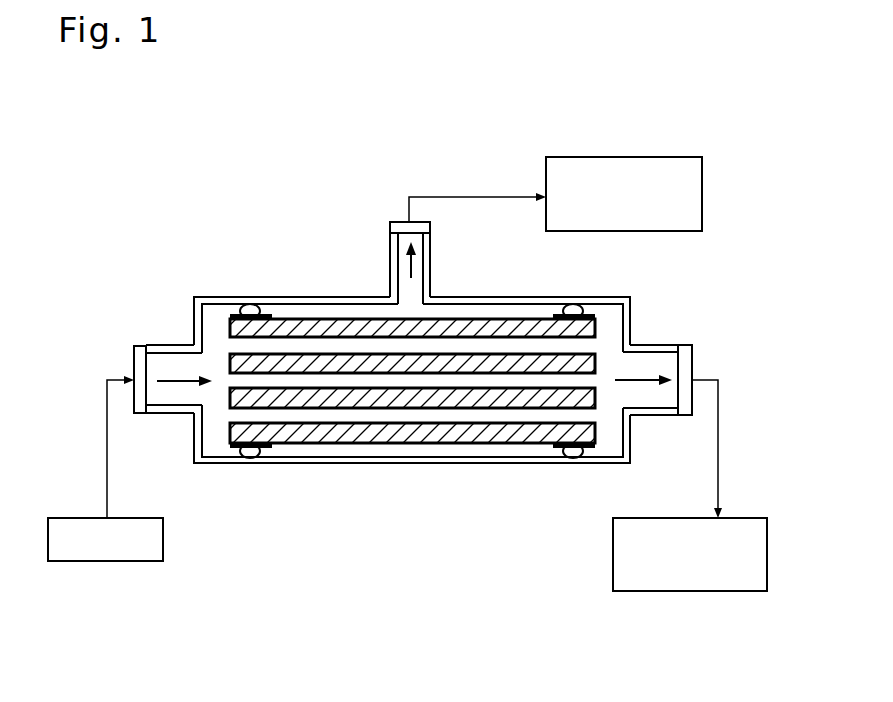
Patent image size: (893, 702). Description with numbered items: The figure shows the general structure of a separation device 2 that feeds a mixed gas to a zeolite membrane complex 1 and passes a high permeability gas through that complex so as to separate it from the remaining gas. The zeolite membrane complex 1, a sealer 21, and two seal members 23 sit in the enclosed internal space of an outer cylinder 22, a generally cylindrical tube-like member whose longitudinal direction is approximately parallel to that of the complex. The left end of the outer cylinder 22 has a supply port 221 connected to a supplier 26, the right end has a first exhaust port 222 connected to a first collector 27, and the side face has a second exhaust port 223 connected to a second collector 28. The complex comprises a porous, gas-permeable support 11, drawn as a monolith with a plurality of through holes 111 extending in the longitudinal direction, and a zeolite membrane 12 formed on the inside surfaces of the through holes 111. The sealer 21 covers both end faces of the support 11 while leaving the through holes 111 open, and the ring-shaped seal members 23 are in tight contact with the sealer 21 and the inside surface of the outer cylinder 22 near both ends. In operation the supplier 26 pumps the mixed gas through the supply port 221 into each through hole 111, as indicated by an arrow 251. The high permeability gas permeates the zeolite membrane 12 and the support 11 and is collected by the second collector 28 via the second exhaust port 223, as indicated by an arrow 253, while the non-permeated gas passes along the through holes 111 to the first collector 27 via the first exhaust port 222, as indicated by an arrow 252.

The zeolite membrane complex 1 is at (495, 544).
The separation device 2 is at (158, 182).
The support 11 is at (532, 435).
The zeolite membrane 12 is at (467, 371).
The through hole 111 is at (373, 391).
The sealer 21 is at (235, 445).
The outer cylinder 22 is at (290, 463).
The seal member 23 is at (248, 310).
The supply port 221 is at (162, 344).
The first exhaust port 222 is at (669, 343).
The second exhaust port 223 is at (389, 247).
The arrow 251 is at (165, 383).
The arrow 252 is at (647, 383).
The arrow 253 is at (408, 275).
The supplier 26 is at (163, 547).
The first collector 27 is at (613, 552).
The second collector 28 is at (702, 193).